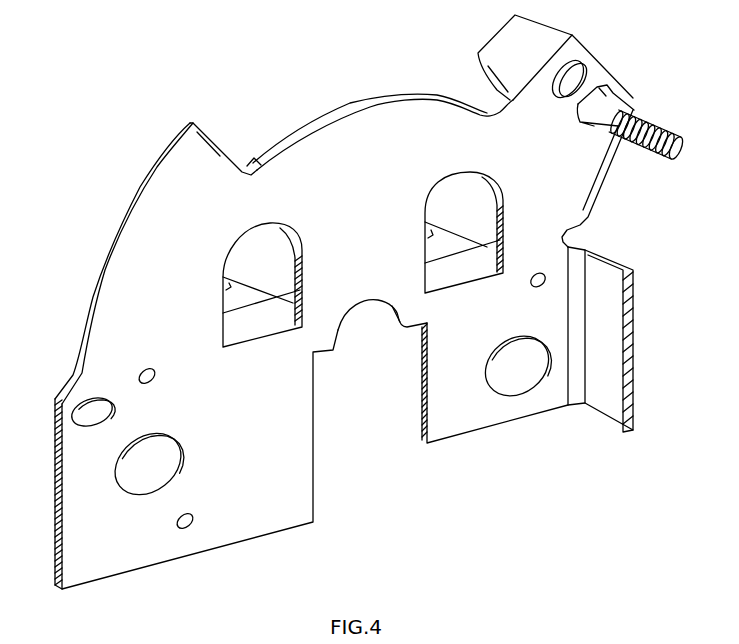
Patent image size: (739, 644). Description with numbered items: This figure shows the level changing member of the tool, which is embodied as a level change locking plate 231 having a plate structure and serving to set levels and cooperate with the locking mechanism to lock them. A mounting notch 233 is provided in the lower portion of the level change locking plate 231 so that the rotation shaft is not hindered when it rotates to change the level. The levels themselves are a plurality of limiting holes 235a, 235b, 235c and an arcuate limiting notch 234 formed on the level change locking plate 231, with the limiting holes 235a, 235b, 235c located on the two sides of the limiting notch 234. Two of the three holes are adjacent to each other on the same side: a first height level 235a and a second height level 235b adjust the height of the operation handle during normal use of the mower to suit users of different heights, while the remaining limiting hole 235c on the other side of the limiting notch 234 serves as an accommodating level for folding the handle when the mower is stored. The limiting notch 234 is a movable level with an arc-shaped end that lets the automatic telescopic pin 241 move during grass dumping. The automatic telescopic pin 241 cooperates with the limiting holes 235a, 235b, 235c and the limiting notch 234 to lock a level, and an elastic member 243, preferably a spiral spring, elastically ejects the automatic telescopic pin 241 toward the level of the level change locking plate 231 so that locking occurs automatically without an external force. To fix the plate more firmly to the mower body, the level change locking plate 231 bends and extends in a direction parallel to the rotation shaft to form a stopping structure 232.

The level change locking plate 231 is at (177, 213).
The stopping structure 232 is at (603, 402).
The mounting notch 233 is at (338, 330).
The limiting notch 234 is at (284, 137).
The limiting hole 235a is at (603, 97).
The limiting hole 235b is at (583, 65).
The limiting hole 235c is at (90, 397).
The automatic telescopic pin 241 is at (600, 116).
The elastic member 243 is at (657, 160).